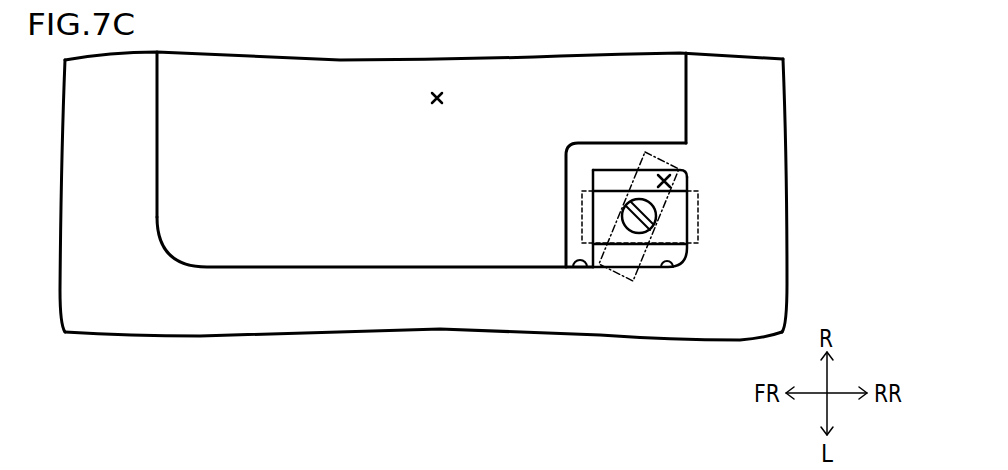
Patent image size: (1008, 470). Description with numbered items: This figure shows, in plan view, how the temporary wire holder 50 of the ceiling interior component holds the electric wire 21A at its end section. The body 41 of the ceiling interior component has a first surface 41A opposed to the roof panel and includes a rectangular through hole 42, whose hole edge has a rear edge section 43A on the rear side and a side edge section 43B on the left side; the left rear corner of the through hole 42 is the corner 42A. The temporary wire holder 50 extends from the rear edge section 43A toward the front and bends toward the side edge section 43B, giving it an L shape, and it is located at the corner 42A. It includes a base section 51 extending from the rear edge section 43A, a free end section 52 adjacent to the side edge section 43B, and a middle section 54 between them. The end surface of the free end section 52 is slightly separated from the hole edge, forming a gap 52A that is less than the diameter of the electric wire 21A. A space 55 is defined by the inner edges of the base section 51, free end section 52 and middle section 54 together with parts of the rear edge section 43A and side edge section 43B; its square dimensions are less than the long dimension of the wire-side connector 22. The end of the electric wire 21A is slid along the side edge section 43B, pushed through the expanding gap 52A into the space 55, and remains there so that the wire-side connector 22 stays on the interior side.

The body 41 is at (770, 288).
The first surface 41A is at (765, 258).
The through hole 42 is at (436, 91).
The corner 42A is at (664, 268).
The rear edge section 43A is at (697, 78).
The side edge section 43B is at (333, 272).
The temporary wire holder 50 is at (568, 136).
The base section 51 is at (675, 153).
The free end section 52 is at (567, 249).
The gap 52A is at (590, 250).
The middle section 54 is at (633, 153).
The space 55 is at (672, 182).
The wire-side connector 22 is at (698, 230).
The electric wire 21A is at (636, 234).